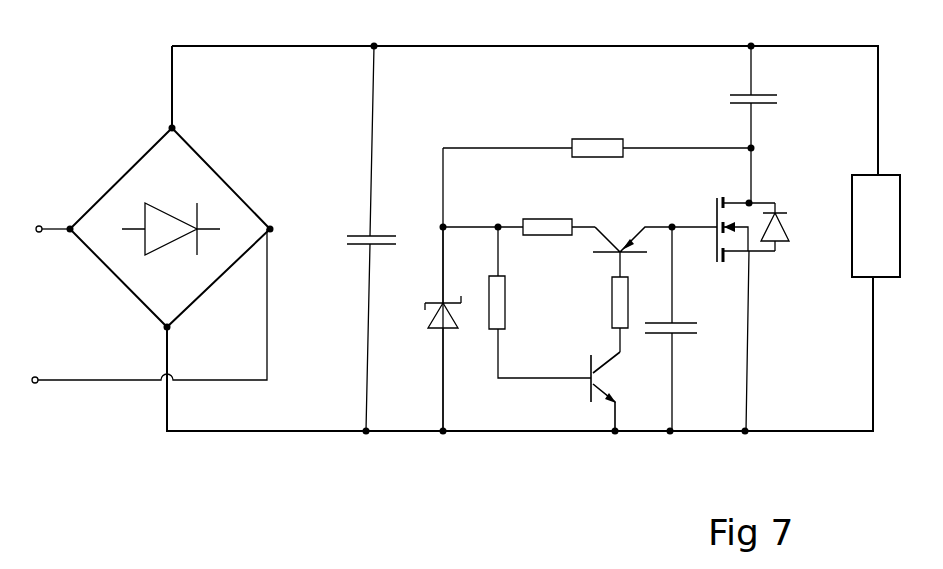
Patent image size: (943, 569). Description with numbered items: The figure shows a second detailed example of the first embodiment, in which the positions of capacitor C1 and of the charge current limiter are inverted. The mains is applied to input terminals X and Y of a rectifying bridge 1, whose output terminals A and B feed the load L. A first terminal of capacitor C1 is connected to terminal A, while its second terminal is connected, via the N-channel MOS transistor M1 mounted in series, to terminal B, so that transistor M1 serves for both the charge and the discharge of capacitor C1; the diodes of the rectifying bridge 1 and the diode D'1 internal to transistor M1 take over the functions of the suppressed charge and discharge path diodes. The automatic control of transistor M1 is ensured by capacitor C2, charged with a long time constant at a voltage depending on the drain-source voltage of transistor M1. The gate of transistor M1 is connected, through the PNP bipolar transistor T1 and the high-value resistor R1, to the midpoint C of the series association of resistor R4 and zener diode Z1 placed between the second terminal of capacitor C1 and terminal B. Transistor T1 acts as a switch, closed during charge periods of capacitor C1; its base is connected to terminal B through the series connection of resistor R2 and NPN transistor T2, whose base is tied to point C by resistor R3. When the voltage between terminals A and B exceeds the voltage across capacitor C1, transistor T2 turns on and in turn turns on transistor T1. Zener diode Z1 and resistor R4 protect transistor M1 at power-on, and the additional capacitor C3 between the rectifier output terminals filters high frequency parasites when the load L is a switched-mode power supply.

The rectifying bridge 1 is at (119, 143).
The input terminal X is at (49, 215).
The input terminal Y is at (146, 306).
The terminal A is at (371, 29).
The terminal B is at (364, 448).
The midpoint C is at (443, 226).
The capacitor C1 is at (733, 124).
The capacitor C2 is at (694, 329).
The additional capacitor C3 is at (362, 238).
The resistor R1 is at (519, 211).
The resistor R2 is at (600, 302).
The resistor R3 is at (540, 302).
The resistor R4 is at (597, 131).
The bipolar transistor T1 is at (632, 225).
The NPN transistor T2 is at (621, 391).
The zener diode Z1 is at (423, 329).
The diode D'1 is at (798, 227).
The transistor M1 is at (780, 263).
The load L is at (886, 174).